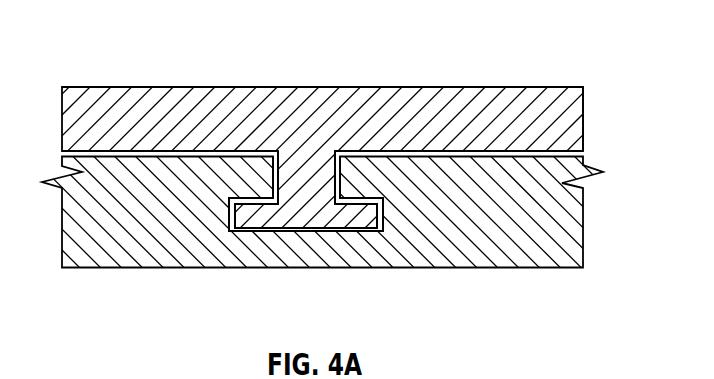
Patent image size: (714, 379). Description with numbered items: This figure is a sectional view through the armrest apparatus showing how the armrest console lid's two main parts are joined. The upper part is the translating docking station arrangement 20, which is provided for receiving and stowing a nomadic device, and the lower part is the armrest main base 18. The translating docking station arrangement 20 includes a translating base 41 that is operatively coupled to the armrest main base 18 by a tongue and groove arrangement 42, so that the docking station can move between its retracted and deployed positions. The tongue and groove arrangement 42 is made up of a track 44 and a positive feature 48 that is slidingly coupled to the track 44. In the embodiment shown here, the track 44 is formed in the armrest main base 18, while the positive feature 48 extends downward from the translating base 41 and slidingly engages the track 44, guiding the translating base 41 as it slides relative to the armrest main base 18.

The armrest main base 18 is at (577, 233).
The translating docking station arrangement 20 is at (568, 100).
The translating base 41 is at (578, 130).
The tongue and groove arrangement 42 is at (357, 162).
The track 44 is at (384, 219).
The positive feature 48 is at (290, 226).